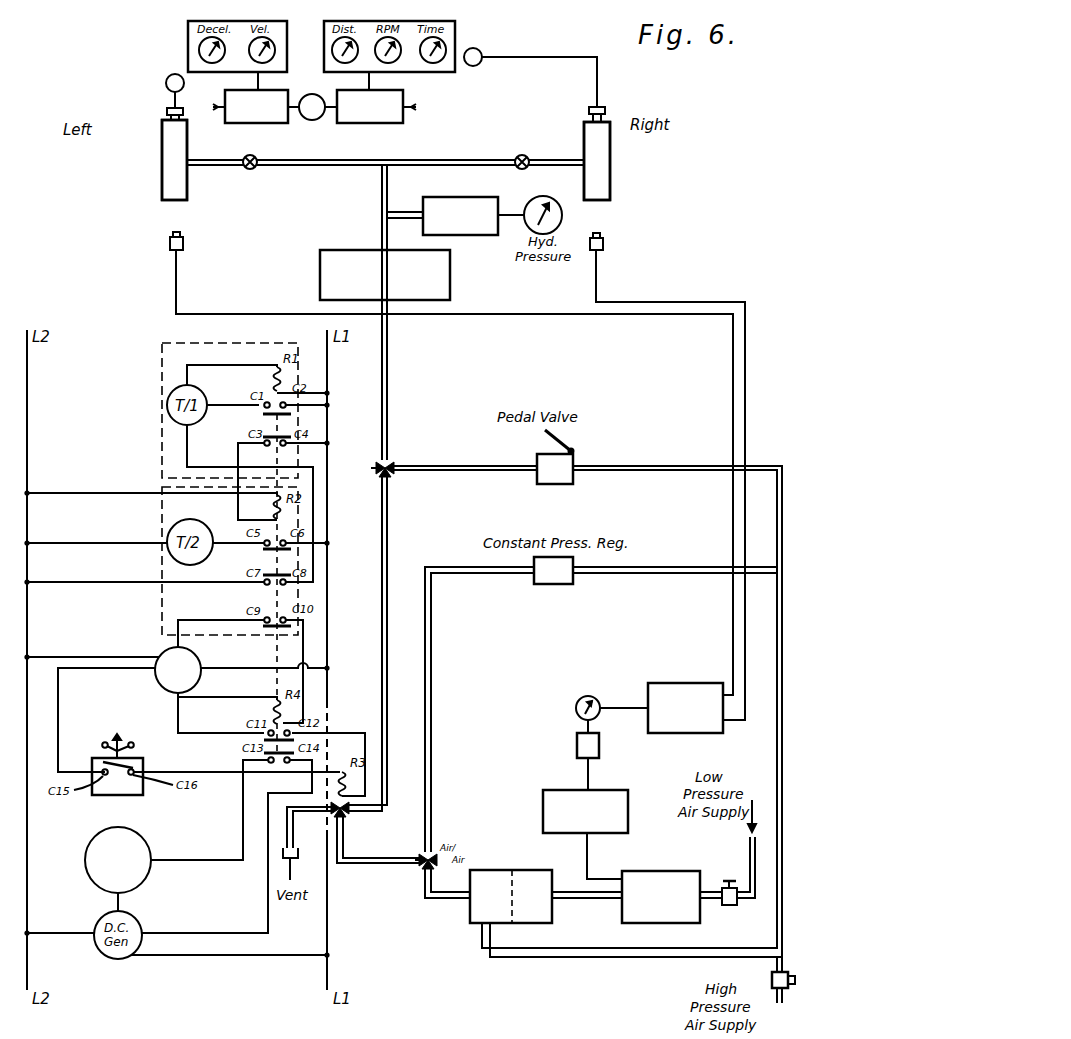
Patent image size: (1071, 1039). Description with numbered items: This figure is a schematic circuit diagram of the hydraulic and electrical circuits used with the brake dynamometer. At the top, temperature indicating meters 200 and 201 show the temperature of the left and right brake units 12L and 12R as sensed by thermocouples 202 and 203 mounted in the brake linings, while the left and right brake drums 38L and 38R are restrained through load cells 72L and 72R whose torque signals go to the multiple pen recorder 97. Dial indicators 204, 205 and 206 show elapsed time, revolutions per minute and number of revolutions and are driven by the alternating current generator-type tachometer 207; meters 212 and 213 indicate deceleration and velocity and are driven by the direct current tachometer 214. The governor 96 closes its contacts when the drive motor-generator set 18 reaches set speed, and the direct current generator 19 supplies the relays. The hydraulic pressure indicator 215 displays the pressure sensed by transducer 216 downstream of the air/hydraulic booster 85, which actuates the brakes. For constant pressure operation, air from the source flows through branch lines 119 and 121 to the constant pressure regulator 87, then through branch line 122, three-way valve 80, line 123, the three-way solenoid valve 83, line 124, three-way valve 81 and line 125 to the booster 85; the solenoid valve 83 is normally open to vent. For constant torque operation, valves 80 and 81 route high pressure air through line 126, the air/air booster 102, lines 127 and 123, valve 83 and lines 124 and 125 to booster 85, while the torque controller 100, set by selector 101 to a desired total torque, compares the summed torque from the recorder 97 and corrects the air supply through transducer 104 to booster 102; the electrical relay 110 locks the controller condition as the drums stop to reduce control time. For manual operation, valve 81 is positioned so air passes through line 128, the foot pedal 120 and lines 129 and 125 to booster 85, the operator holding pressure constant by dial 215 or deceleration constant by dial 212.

The deceleration indicating meter 212 is at (199, 51).
The velocity indicating meter 213 is at (275, 50).
The revolutions dial indicator 206 is at (345, 63).
The revolutions-per-minute dial indicator 205 is at (388, 63).
The elapsed time dial indicator 204 is at (433, 63).
The direct current tachometer 214 is at (250, 106).
The governor 96 is at (320, 92).
The alternating current generator-type tachometer 207 is at (376, 106).
The temperature indicating meter 200 is at (166, 83).
The thermocouple 202 is at (166, 111).
The left brake drum 38L is at (162, 140).
The left brake unit 12L is at (162, 167).
The left load cell 72L is at (170, 245).
The temperature indicating meter 201 is at (480, 50).
The thermocouple 203 is at (606, 108).
The right brake drum 38R is at (611, 150).
The right brake unit 12R is at (612, 176).
The right load cell 72R is at (603, 244).
The transducer 216 is at (453, 197).
The hydraulic pressure indicator 215 is at (563, 215).
The air/hydraulic booster 85 is at (451, 289).
The line 125 is at (389, 385).
The line 124 is at (391, 525).
The three-way valve 81 is at (392, 462).
The line 129 is at (471, 465).
The foot pedal 120 is at (575, 461).
The line 128 is at (664, 465).
The branch line 122 is at (434, 692).
The constant pressure regulator 87 is at (558, 586).
The branch line 121 is at (683, 580).
The branch line 119 is at (776, 738).
The direct current generator 19 is at (200, 666).
The automatic pen recorder 97 is at (686, 683).
The selector 101 is at (576, 708).
The electrical relay 110 is at (577, 746).
The torque controller 100 is at (543, 799).
The direct current motor-generator set 18 is at (148, 876).
The three-way solenoid valve 83 is at (352, 816).
The line 123 is at (365, 864).
The three-way valve 80 is at (434, 849).
The air/air booster 102 is at (553, 878).
The line 127 is at (448, 902).
The transducer 104 is at (683, 871).
The line 126 is at (632, 954).